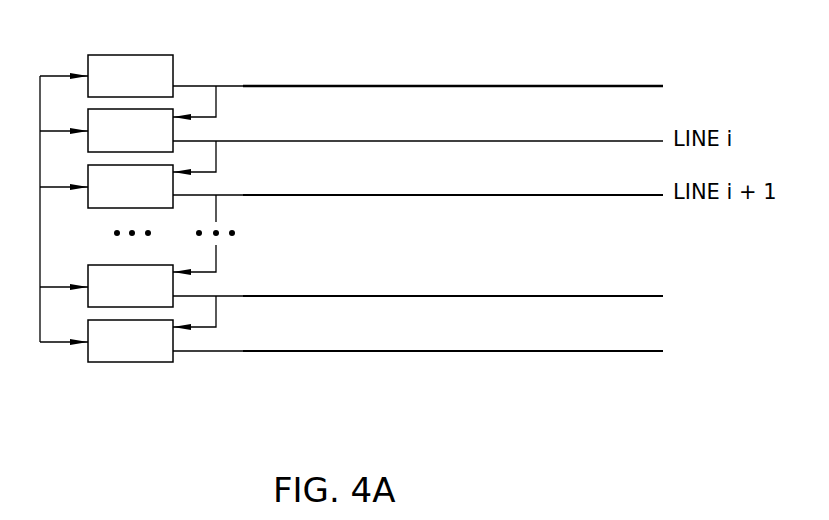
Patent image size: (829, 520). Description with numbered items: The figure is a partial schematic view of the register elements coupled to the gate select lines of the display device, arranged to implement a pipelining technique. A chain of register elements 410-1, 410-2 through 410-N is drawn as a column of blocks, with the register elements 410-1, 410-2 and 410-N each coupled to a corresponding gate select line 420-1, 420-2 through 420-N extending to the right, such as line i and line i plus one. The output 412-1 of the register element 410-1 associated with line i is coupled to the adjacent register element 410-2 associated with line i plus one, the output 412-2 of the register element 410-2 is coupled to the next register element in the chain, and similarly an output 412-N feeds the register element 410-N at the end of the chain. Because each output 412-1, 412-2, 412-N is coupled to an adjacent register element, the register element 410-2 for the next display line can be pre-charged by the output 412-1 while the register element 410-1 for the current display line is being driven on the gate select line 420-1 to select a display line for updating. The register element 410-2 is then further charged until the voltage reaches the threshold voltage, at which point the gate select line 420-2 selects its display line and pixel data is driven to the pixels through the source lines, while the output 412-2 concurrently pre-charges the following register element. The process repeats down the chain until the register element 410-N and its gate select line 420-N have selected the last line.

The register element 410-1 is at (162, 143).
The register element 410-2 is at (162, 198).
The register element 410-N is at (165, 352).
The output of register element 412-1 is at (225, 140).
The output of register element 412-2 is at (230, 197).
The output of register element 412-N is at (212, 351).
The gate select line 420-1 is at (421, 140).
The gate select line 420-2 is at (474, 195).
The gate select line 420-N is at (462, 351).